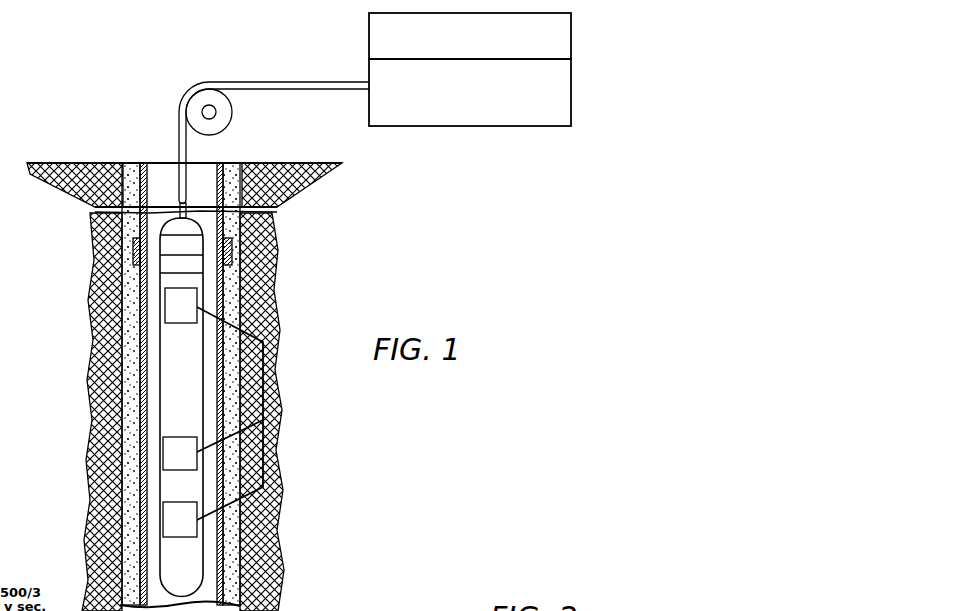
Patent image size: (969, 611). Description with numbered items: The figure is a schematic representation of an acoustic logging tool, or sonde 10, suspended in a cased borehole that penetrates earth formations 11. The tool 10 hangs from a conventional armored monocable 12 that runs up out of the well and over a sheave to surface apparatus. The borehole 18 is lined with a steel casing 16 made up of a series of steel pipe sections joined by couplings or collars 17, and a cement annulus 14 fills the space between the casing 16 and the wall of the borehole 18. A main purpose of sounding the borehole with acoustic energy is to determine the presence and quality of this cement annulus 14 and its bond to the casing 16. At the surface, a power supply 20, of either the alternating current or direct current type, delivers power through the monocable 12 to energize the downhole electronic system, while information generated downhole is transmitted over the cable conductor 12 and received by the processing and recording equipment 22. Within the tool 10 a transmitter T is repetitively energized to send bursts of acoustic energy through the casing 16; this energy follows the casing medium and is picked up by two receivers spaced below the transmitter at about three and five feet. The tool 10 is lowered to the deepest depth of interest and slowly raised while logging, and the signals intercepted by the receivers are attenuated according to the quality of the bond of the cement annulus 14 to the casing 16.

The acoustic logging tool 10 is at (160, 355).
The earth formations 11 is at (259, 281).
The armored monocable 12 is at (265, 80).
The cement annulus 14 is at (240, 298).
The steel casing 16 is at (208, 549).
The collars 17 is at (224, 252).
The borehole 18 is at (236, 563).
The power supply 20 is at (571, 33).
The processing and recording equipment 22 is at (571, 90).